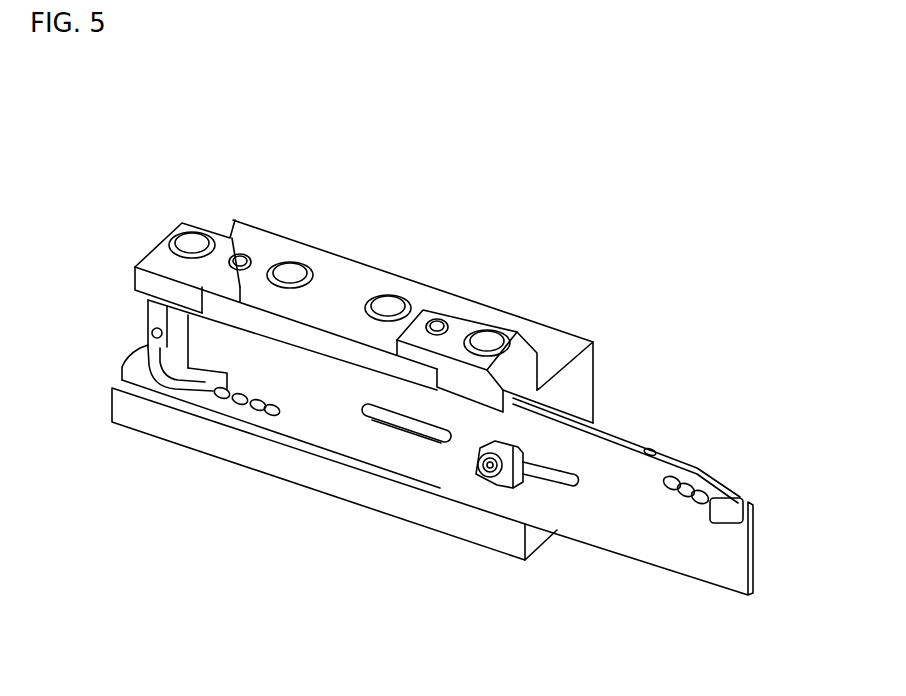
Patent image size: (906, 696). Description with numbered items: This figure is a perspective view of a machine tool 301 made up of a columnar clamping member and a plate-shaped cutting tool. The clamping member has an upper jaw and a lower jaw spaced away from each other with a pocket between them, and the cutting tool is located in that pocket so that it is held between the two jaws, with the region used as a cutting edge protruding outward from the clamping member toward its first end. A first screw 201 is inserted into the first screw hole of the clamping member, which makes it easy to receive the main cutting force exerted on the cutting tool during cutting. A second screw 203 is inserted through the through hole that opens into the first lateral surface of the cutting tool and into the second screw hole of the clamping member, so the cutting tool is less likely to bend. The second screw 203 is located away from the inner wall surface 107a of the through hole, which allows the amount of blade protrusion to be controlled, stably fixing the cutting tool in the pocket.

The machine tool 301 is at (227, 135).
The first screw 201 is at (188, 240).
The second screw 203 is at (485, 473).
The inner wall surface 107a is at (568, 470).